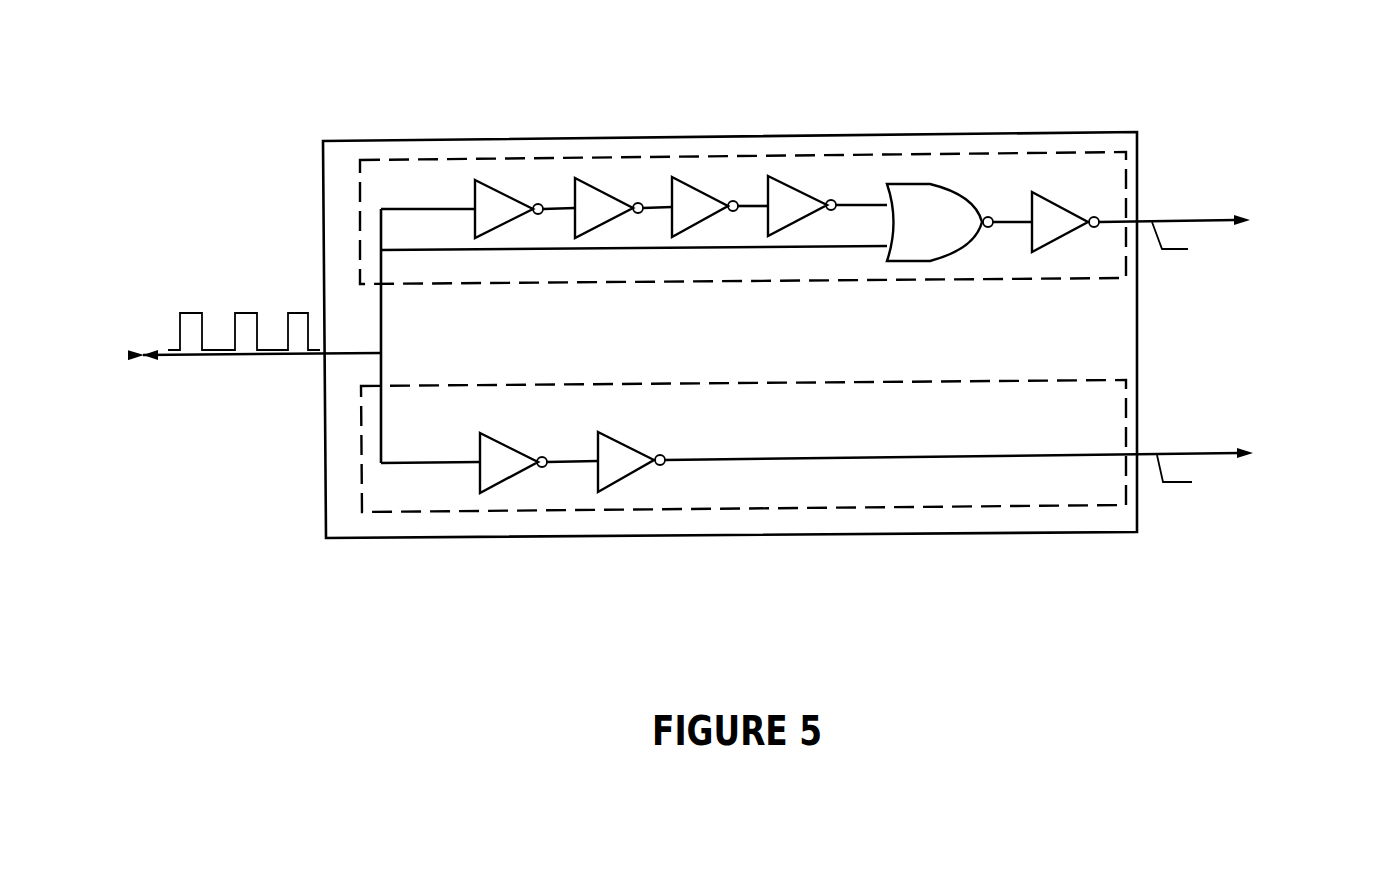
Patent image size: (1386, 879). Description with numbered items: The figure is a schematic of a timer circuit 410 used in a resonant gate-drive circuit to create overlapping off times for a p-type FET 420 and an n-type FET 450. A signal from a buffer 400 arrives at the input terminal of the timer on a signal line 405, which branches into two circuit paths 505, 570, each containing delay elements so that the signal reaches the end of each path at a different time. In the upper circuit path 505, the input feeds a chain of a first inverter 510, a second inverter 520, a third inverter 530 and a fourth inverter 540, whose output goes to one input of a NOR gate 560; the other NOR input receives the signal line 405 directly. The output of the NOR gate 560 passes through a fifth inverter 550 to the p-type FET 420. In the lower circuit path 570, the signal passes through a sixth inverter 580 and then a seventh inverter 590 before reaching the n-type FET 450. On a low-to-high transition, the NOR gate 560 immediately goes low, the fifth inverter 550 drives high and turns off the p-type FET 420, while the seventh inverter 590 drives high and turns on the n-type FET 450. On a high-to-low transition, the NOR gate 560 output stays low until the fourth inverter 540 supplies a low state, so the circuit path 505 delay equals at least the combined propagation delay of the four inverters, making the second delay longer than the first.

The buffer 400 is at (213, 344).
The signal line 405 is at (297, 357).
The timer circuit 410 is at (801, 58).
The p-type FET 420 is at (1233, 215).
The n-type FET 450 is at (1017, 438).
The circuit path 505 is at (848, 280).
The first inverter 510 is at (497, 191).
The second inverter 520 is at (603, 190).
The third inverter 530 is at (700, 189).
The fourth inverter 540 is at (798, 188).
The fifth inverter 550 is at (1062, 202).
The NOR gate 560 is at (927, 263).
The circuit path 570 is at (815, 507).
The sixth inverter 580 is at (505, 480).
The seventh inverter 590 is at (628, 478).